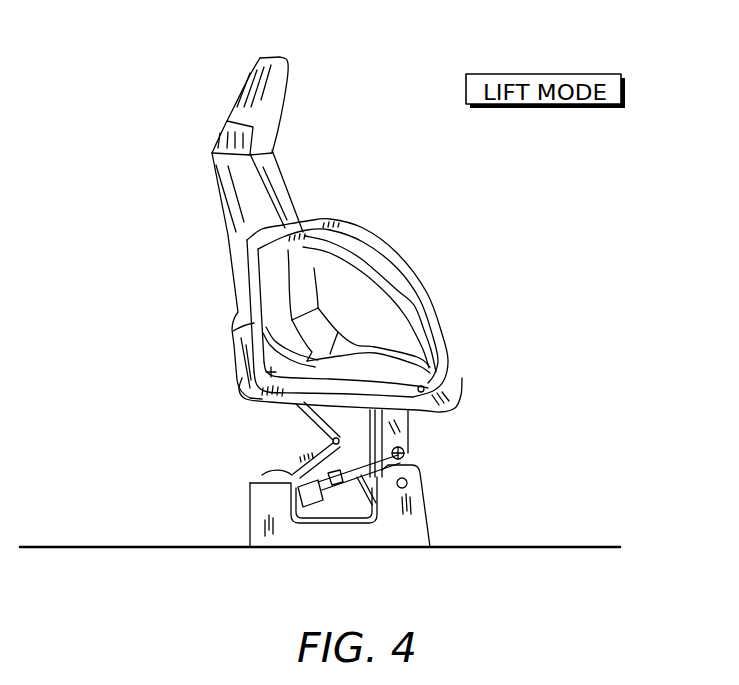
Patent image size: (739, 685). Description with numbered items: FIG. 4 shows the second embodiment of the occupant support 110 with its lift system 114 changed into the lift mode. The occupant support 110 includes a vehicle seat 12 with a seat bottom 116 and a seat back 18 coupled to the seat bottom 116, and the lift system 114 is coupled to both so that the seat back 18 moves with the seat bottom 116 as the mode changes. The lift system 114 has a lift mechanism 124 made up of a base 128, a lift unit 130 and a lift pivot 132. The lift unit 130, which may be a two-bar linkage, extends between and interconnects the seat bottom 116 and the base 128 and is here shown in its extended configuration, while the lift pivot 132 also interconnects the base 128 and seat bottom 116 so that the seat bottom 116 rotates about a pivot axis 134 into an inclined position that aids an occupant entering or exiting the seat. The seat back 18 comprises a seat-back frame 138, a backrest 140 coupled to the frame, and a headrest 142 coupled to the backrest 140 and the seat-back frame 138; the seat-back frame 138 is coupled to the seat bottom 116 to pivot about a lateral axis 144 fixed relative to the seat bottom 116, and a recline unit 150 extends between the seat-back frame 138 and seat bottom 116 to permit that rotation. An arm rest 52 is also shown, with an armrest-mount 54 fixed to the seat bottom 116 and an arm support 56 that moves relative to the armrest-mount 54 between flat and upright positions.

The vehicle seat 12 is at (377, 194).
The seat back 18 is at (285, 197).
The arm rest 52 is at (365, 254).
The armrest-mount 54 is at (443, 351).
The arm support 56 is at (317, 294).
The occupant support 110 is at (388, 66).
The lift system 114 is at (78, 336).
The seat bottom 116 is at (460, 375).
The lift mechanism 124 is at (158, 575).
The base 128 is at (248, 515).
The lift unit 130 is at (328, 442).
The lift pivot 132 is at (383, 490).
The pivot axis 134 is at (408, 448).
The seat-back frame 138 is at (227, 252).
The backrest 140 is at (375, 247).
The headrest 142 is at (283, 121).
The lateral axis 144 is at (240, 393).
The recline unit 150 is at (236, 352).